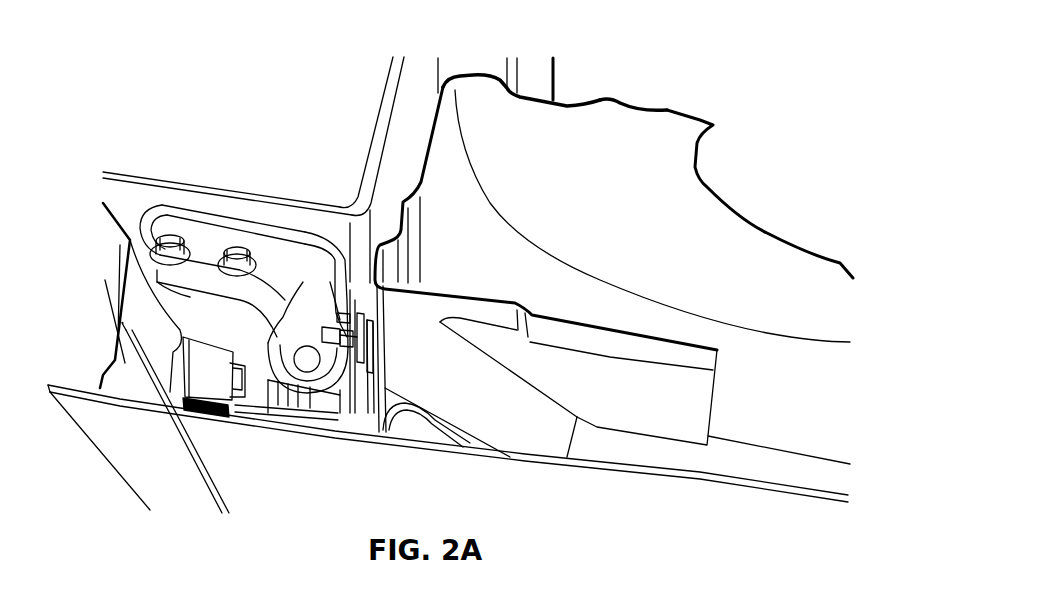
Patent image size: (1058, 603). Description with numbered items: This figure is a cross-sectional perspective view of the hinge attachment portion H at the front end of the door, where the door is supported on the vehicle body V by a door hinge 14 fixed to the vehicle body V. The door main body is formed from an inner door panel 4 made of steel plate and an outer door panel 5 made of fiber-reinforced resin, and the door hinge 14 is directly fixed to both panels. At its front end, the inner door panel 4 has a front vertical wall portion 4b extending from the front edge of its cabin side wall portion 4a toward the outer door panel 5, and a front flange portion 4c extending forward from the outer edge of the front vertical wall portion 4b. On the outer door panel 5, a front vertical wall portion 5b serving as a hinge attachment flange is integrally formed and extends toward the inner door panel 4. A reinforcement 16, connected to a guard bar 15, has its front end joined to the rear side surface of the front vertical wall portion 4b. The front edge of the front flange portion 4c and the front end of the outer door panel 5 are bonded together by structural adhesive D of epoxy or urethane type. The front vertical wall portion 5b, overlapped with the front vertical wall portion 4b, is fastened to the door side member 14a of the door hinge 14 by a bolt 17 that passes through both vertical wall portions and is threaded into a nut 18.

The inner door panel 4 is at (672, 107).
The cabin side wall portion 4a is at (607, 95).
The front vertical wall portion 4b is at (435, 125).
The front flange portion 4c is at (285, 412).
The outer door panel 5 is at (257, 490).
The front vertical wall portion 5b is at (381, 420).
The door hinge 14 is at (178, 220).
The door side member 14a is at (335, 300).
The guard bar 15 is at (790, 450).
The reinforcement 16 is at (717, 397).
The bolt 17 is at (383, 350).
The nut 18 is at (300, 318).
The structural adhesive D is at (205, 412).
The hinge attachment portion H is at (260, 126).
The vehicle body V is at (370, 140).